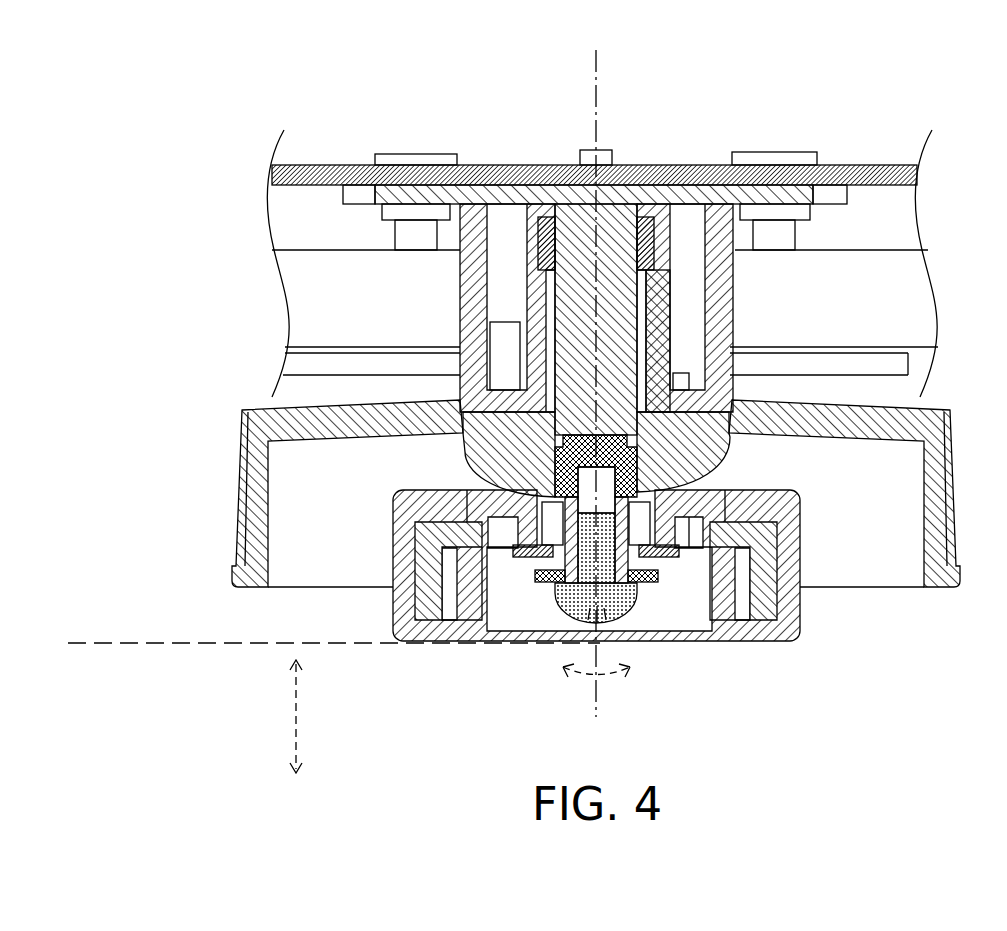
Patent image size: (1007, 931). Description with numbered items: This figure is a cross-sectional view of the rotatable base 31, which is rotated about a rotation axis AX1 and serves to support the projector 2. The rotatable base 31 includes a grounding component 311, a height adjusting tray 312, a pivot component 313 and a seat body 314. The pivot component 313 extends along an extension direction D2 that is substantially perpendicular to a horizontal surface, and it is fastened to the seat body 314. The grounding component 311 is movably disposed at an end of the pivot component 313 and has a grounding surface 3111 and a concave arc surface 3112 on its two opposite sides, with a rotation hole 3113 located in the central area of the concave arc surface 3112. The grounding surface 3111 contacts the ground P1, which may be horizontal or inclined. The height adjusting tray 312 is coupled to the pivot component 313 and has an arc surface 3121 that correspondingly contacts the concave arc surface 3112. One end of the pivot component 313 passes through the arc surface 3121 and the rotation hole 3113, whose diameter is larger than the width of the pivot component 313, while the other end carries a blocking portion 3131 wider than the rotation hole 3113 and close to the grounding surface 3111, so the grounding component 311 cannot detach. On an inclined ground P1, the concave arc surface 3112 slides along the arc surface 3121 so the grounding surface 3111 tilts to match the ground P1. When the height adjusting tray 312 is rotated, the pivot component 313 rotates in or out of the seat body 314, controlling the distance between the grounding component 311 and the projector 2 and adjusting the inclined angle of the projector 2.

The projector 2 is at (510, 140).
The rotatable base 31 is at (503, 460).
The grounding component 311 is at (780, 642).
The grounding surface 3111 is at (427, 642).
The concave arc surface 3112 is at (800, 502).
The rotation hole 3113 is at (640, 525).
The height adjusting tray 312 is at (252, 525).
The arc surface 3121 is at (707, 473).
The pivot component 313 is at (620, 288).
The blocking portion 3131 is at (545, 582).
The seat body 314 is at (728, 323).
The rotation axis AX1 is at (600, 706).
The ground P1 is at (97, 645).
The extension direction D2 is at (277, 716).